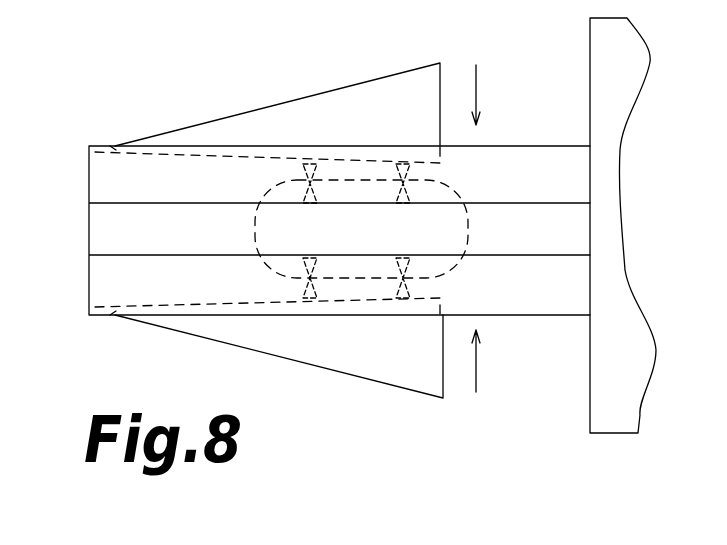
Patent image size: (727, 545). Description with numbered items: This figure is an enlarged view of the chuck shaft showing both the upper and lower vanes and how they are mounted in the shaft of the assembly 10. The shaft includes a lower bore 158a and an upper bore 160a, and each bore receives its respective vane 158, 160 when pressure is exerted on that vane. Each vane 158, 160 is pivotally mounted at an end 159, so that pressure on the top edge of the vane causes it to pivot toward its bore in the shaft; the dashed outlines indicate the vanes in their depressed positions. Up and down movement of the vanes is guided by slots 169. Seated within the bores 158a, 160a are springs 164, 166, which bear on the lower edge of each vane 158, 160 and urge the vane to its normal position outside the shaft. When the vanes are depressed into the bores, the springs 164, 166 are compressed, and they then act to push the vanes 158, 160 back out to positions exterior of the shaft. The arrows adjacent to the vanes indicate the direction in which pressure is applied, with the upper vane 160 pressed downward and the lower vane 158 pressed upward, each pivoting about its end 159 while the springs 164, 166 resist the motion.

The folding container / assembly 10 is at (510, 50).
The lower vane 158 is at (304, 358).
The lower bore 158a is at (118, 283).
The end 159 is at (113, 144).
The upper vane 160 is at (312, 104).
The upper bore 160a is at (125, 181).
The spring 164 is at (350, 231).
The spring 166 is at (440, 231).
The slot 169 is at (437, 145).